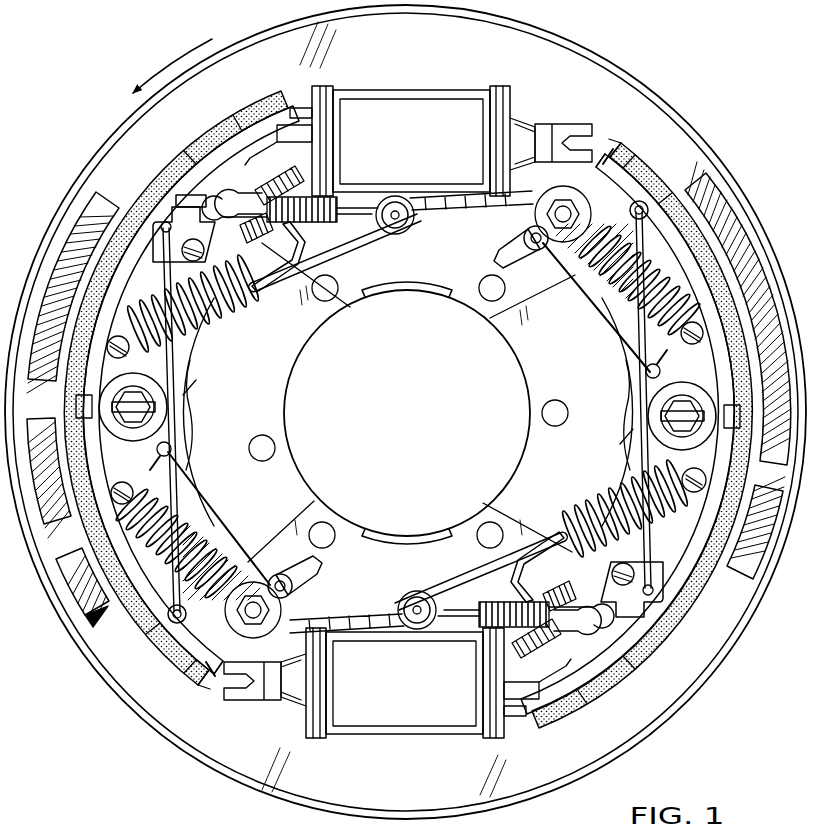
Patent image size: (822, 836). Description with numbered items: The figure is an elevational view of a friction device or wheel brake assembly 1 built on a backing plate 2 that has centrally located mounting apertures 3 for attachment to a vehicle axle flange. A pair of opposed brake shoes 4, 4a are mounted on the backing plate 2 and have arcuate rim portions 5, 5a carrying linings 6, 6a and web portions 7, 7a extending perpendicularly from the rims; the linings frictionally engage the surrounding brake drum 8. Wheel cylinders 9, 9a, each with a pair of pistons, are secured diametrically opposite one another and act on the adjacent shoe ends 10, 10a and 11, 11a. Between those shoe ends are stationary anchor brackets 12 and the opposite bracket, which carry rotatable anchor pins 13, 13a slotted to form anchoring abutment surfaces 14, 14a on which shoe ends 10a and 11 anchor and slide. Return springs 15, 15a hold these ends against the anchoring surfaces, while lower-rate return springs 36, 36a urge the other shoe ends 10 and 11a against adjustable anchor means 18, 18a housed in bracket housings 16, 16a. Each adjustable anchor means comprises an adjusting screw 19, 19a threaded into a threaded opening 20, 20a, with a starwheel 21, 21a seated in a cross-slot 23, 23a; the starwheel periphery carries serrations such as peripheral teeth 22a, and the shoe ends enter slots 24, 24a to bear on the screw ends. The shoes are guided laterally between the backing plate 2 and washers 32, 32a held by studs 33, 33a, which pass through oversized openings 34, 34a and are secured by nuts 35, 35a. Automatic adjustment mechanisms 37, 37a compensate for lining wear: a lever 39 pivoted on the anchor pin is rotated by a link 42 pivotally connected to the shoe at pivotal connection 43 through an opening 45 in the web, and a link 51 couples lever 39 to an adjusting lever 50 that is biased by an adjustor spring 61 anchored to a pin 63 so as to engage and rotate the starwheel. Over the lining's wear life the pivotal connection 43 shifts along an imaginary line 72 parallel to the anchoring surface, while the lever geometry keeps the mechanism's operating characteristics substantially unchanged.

The wheel brake assembly 1 is at (630, 63).
The backing plate 2 is at (266, 124).
The mounting apertures 3 is at (271, 448).
The brake shoe 4 is at (190, 409).
The brake shoe 4a is at (626, 408).
The arcuate rim portion 5 is at (157, 665).
The arcuate rim portion 5a is at (721, 591).
The lining 6 is at (193, 696).
The lining 6a is at (543, 735).
The web portion 7 is at (191, 390).
The web portion 7a is at (627, 434).
The brake drum 8 is at (85, 213).
The wheel cylinder 9 is at (411, 141).
The wheel cylinder 9a is at (405, 683).
The brake shoe end 10 is at (247, 140).
The brake shoe end 10a is at (600, 191).
The brake shoe end 11 is at (182, 681).
The brake shoe end 11a is at (558, 698).
The anchor bracket 12 is at (411, 411).
The anchor pin 13 is at (270, 701).
The anchor pin 13a is at (567, 134).
The anchoring abutment surface 14 is at (257, 551).
The anchoring abutment surface 14a is at (562, 262).
The return spring 15 is at (123, 533).
The return spring 15a is at (672, 338).
The anchor bracket housing 16 is at (333, 245).
The anchor bracket housing 16a is at (498, 566).
The adjustable anchor means 18 is at (208, 181).
The adjustable anchor means 18a is at (604, 648).
The adjusting screw 19 is at (305, 178).
The adjusting screw 19a is at (521, 648).
The threaded opening 20 is at (297, 180).
The threaded opening 20a is at (521, 658).
The starwheel 21 is at (193, 157).
The starwheel 21a is at (598, 670).
The peripheral teeth 22a is at (551, 541).
The cross-slot 23 is at (240, 203).
The cross-slot 23a is at (578, 640).
The slot 24 is at (272, 294).
The slot 24a is at (578, 506).
The washer 32 is at (110, 430).
The washer 32a is at (713, 450).
The stud 33 is at (110, 413).
The stud 33a is at (705, 414).
The oversized opening 34 is at (184, 408).
The oversized opening 34a is at (624, 438).
The nut 35 is at (120, 390).
The nut 35a is at (696, 410).
The return spring 36 is at (123, 313).
The return spring 36a is at (704, 528).
The automatic adjustment mechanism 37 is at (181, 442).
The automatic adjustment mechanism 37a is at (631, 388).
The lever 39 is at (165, 616).
The link 42 is at (213, 515).
The pivotal connection 43 is at (147, 470).
The opening 45 is at (158, 452).
The adjusting lever 50 is at (172, 197).
The link 51 is at (645, 240).
The adjustor spring 61 is at (367, 411).
The pin 63 is at (392, 228).
The imaginary line 72 is at (190, 423).